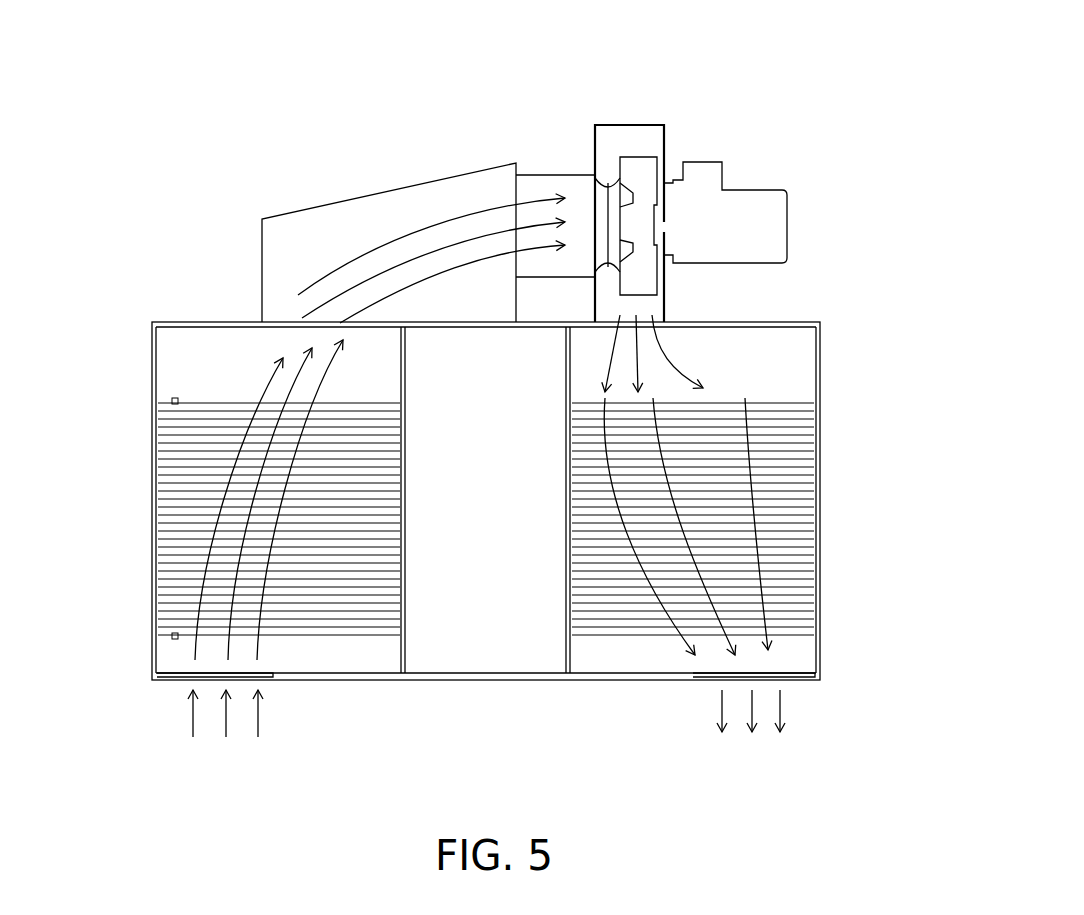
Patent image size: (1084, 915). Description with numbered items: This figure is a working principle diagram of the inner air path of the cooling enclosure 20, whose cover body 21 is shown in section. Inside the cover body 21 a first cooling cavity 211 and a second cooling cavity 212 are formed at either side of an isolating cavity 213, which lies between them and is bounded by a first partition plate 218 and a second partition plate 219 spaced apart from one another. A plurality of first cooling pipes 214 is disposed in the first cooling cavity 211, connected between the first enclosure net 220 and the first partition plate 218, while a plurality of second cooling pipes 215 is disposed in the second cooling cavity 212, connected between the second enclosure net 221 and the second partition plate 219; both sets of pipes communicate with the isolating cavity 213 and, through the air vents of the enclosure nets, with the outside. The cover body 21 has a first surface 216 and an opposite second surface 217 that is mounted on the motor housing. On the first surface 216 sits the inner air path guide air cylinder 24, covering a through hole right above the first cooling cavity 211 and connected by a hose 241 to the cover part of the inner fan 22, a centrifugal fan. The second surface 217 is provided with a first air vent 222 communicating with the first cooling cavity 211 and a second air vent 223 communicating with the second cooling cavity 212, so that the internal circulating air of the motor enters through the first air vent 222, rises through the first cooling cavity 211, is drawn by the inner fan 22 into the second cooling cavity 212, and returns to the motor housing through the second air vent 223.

The cooling enclosure 20 is at (512, 78).
The cover body 21 is at (822, 345).
The inner fan 22 is at (666, 135).
The inner air path guide air cylinder 24 is at (392, 188).
The hose 241 is at (567, 175).
The first cooling cavity 211 is at (328, 668).
The second cooling cavity 212 is at (630, 667).
The isolating cavity 213 is at (465, 653).
The first cooling pipes 214 is at (158, 410).
The second cooling pipes 215 is at (822, 398).
The first surface 216 is at (742, 328).
The second surface 217 is at (508, 683).
The first partition plate 218 is at (405, 387).
The second partition plate 219 is at (568, 545).
The first enclosure net 220 is at (150, 655).
The second enclosure net 221 is at (820, 612).
The first air vent 222 is at (183, 682).
The second air vent 223 is at (703, 678).